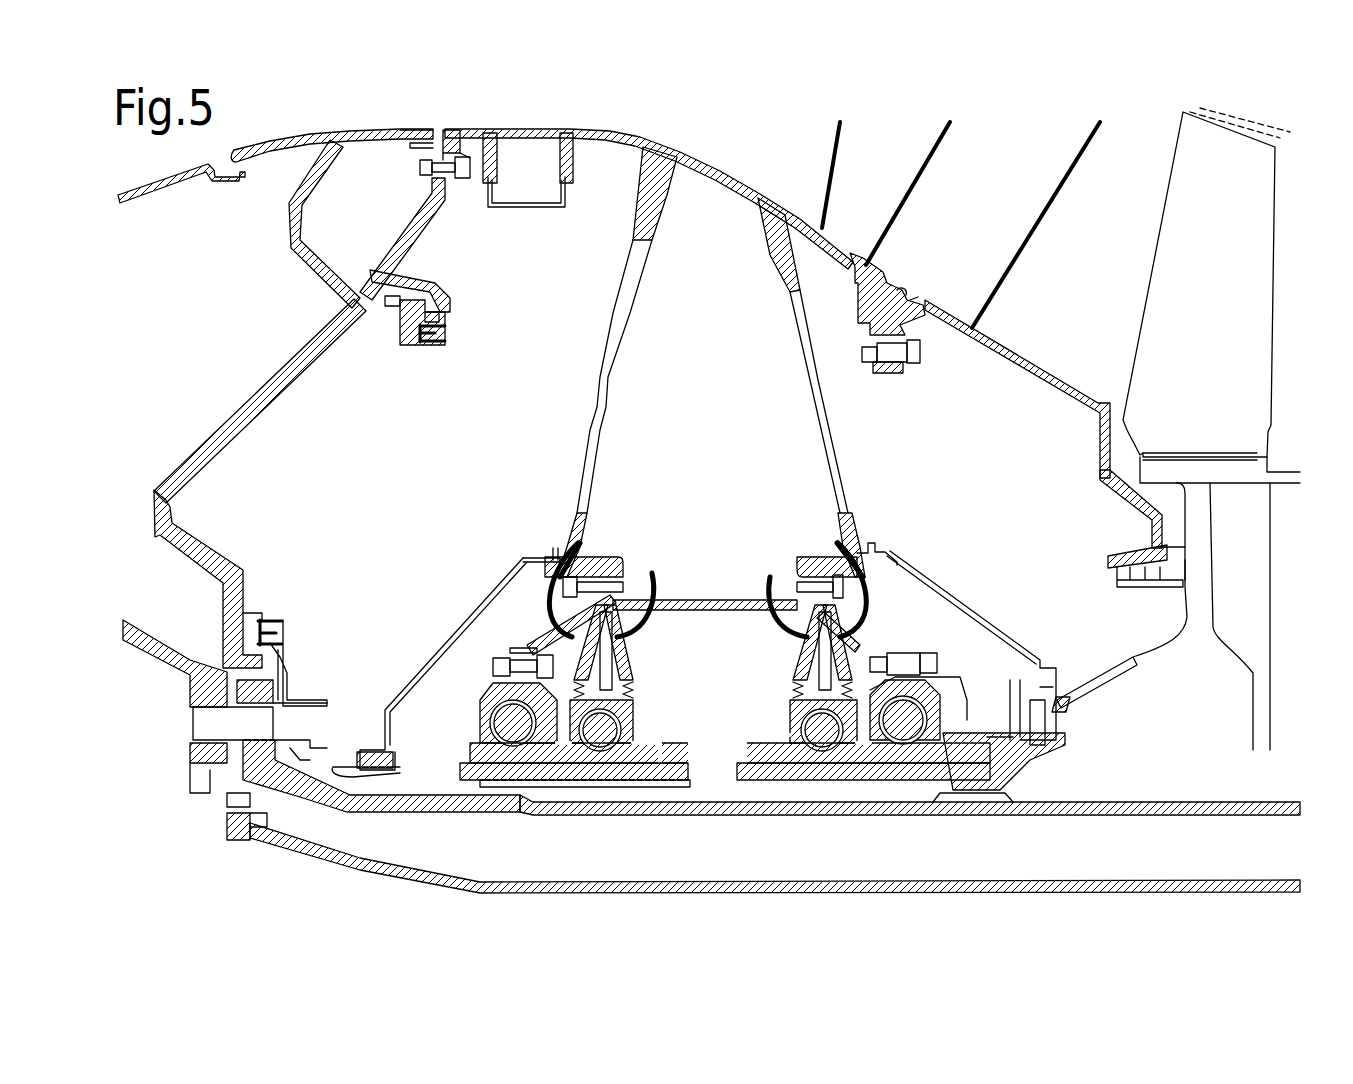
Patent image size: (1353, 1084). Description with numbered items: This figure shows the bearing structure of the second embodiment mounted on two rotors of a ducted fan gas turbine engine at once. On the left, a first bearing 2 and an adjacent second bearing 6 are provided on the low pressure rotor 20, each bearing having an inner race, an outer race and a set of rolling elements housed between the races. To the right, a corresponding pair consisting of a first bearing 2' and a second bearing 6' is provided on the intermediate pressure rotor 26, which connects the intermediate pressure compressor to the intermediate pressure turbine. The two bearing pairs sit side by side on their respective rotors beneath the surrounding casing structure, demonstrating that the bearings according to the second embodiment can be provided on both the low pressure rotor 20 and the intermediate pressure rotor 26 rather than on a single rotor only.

The first bearing 2 is at (629, 713).
The first bearing 2' is at (792, 709).
The second bearing 6 is at (484, 710).
The second bearing 6' is at (934, 701).
The low pressure rotor 20 is at (466, 806).
The intermediate pressure rotor 26 is at (975, 775).